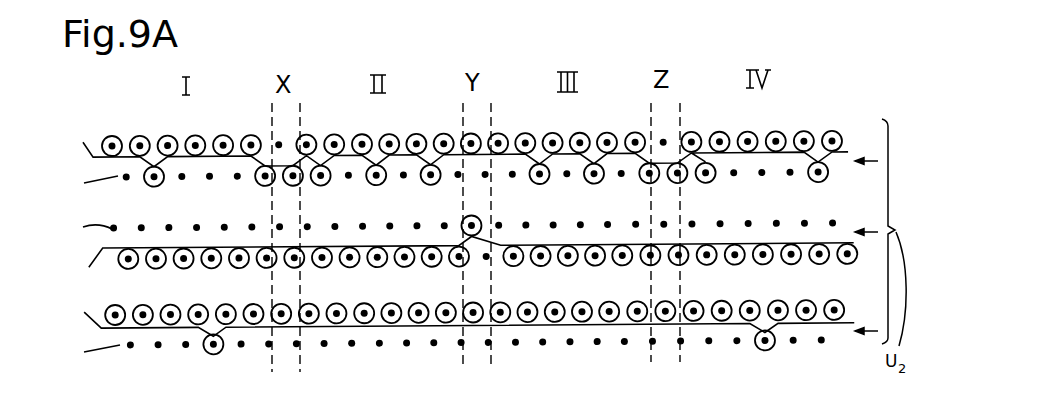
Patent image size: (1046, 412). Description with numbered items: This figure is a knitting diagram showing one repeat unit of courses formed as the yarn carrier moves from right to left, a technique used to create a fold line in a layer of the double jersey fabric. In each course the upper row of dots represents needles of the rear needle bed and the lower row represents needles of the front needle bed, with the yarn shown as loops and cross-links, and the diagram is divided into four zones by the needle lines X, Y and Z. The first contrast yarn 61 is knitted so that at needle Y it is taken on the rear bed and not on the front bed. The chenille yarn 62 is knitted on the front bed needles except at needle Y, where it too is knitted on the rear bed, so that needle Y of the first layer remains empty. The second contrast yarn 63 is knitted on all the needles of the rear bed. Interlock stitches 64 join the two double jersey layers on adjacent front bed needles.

The first contrast yarn 61 is at (848, 151).
The chenille yarn 62 is at (847, 243).
The second contrast yarn 63 is at (845, 317).
The interlock stitches 64 is at (212, 356).